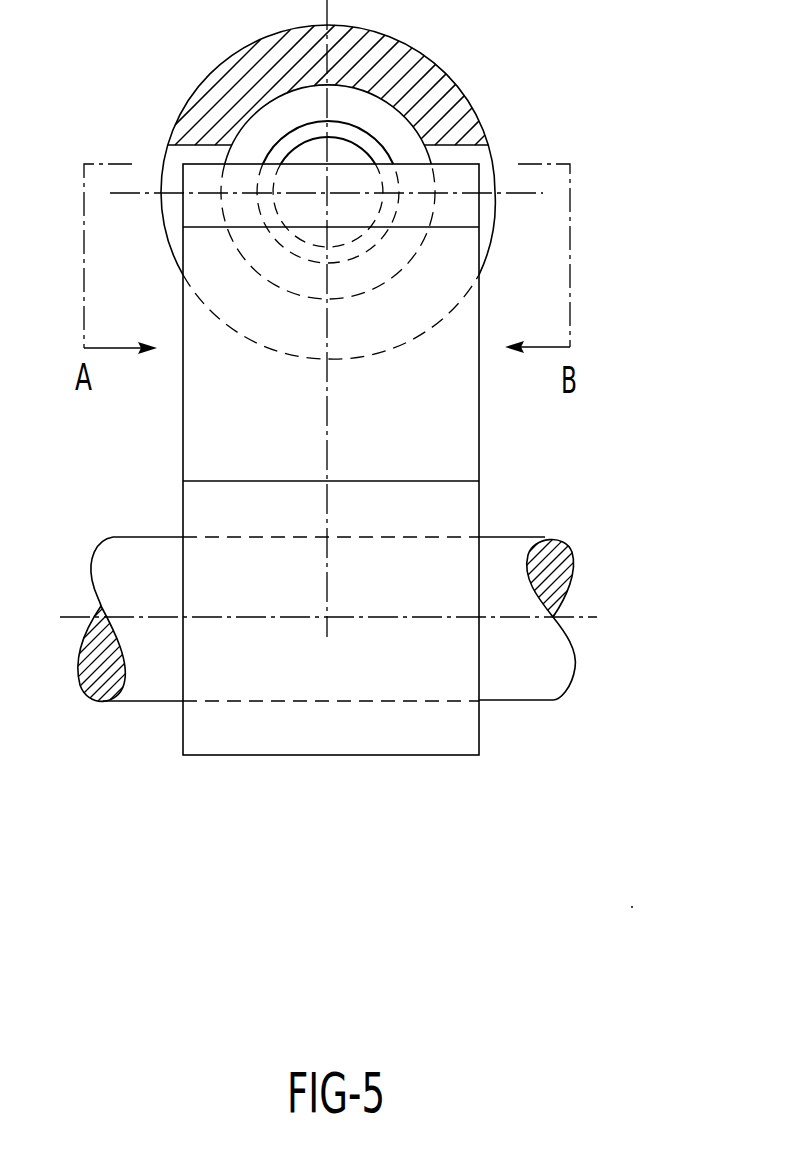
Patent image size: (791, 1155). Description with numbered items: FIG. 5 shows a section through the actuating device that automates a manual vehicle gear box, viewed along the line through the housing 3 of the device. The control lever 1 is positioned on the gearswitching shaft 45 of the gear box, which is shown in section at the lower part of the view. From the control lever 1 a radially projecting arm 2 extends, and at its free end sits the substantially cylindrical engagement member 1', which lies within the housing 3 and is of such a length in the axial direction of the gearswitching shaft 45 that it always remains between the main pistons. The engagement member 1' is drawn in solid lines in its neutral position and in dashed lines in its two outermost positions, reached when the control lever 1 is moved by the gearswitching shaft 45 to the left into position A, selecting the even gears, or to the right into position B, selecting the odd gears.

The control lever 1 is at (419, 459).
The engagement member 1' is at (455, 210).
The radially projecting arm 2 is at (230, 424).
The housing 3 is at (203, 88).
The gearswitching shaft 45 is at (548, 675).